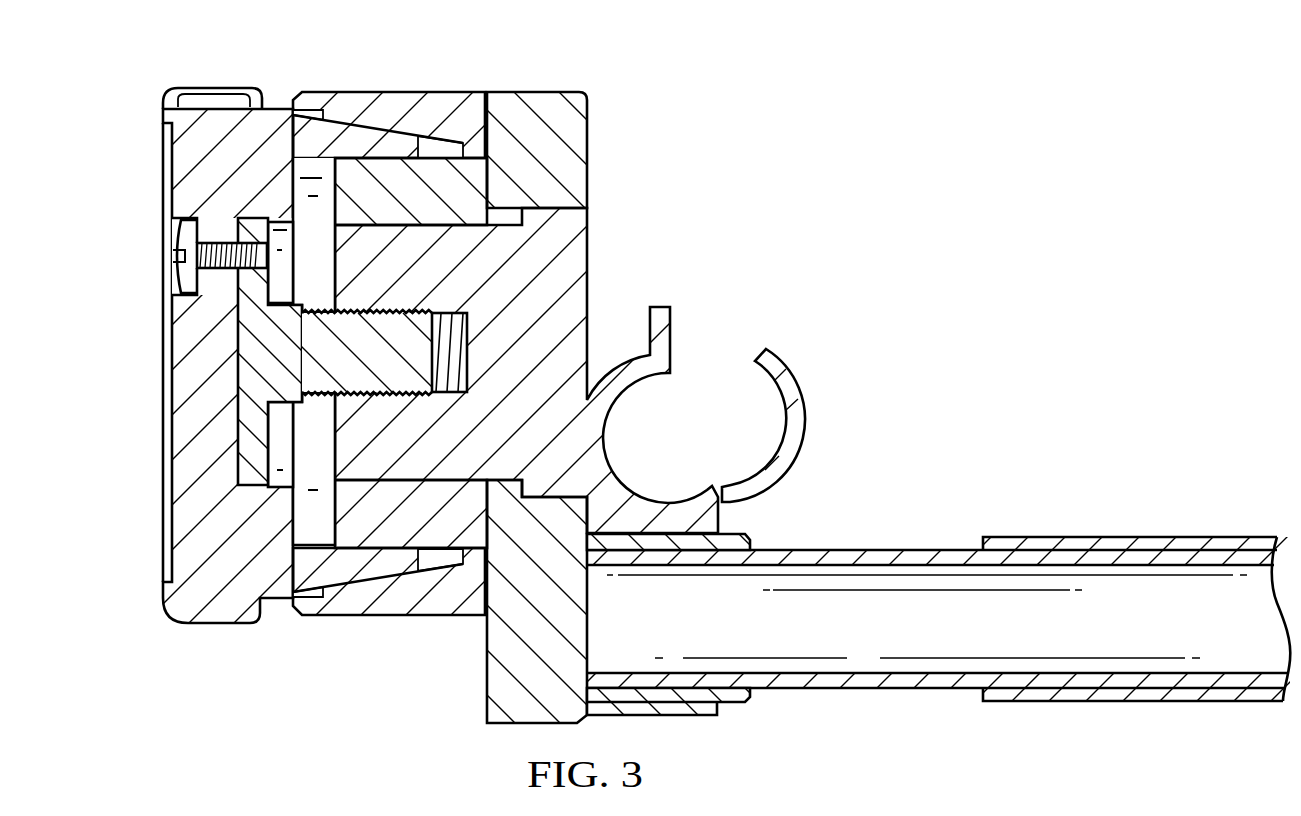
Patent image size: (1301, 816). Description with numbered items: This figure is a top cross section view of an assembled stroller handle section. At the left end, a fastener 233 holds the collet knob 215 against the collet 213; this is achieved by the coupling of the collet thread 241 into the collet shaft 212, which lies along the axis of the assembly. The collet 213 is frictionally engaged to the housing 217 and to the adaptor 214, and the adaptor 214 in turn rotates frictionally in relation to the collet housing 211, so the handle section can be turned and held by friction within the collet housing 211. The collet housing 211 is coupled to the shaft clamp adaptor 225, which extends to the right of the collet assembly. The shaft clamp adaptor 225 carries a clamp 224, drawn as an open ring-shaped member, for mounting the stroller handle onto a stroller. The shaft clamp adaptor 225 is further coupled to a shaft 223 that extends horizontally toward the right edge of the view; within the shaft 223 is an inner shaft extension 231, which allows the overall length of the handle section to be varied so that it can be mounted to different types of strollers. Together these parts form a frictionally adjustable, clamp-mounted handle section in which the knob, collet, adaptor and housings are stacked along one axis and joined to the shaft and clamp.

The collet housing 211 is at (577, 143).
The collet shaft 212 is at (577, 273).
The collet 213 is at (353, 565).
The adaptor 214 is at (433, 533).
The collet knob 215 is at (237, 608).
The housing 217 is at (403, 105).
The shaft 223 is at (1135, 538).
The clamp 224 is at (802, 425).
The shaft clamp adaptor 225 is at (732, 702).
The inner shaft extension 231 is at (865, 650).
The fastener 233 is at (177, 242).
The collet thread 241 is at (267, 377).